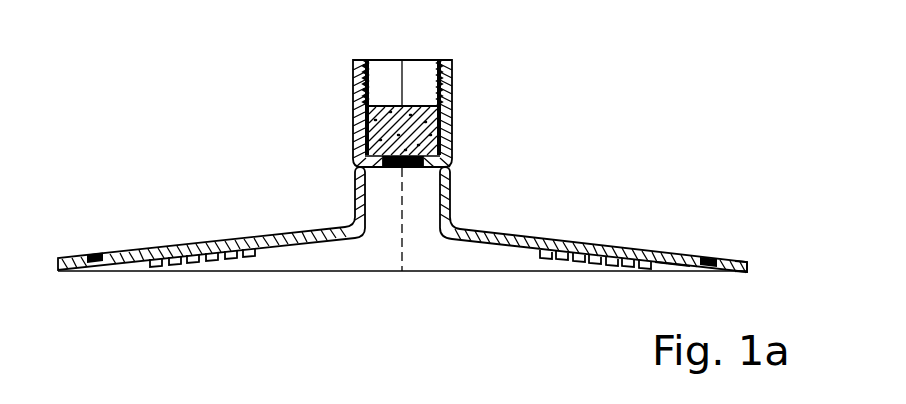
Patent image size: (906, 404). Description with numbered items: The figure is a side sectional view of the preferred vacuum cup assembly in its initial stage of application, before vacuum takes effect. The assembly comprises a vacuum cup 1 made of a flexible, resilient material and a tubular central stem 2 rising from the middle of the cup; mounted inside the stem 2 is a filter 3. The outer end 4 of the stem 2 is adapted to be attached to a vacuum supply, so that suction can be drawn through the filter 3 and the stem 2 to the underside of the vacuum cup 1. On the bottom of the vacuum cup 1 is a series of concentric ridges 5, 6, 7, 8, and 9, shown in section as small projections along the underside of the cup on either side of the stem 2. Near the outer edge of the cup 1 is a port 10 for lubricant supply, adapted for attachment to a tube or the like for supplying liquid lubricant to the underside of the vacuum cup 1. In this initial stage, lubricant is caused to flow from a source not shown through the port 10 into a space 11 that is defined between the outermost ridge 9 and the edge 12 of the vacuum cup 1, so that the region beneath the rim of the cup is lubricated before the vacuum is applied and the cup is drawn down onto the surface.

The vacuum cup 1 is at (478, 230).
The tubular central stem 2 is at (452, 106).
The filter 3 is at (397, 129).
The outer end of stem 4 is at (373, 60).
The concentric ridge 5 is at (260, 262).
The concentric ridge 6 is at (233, 262).
The concentric ridge 7 is at (207, 262).
The concentric ridge 8 is at (188, 262).
The outermost ridge 9 is at (162, 262).
The port 10 is at (710, 257).
The space 11 is at (663, 268).
The edge of the vacuum cup 12 is at (745, 265).